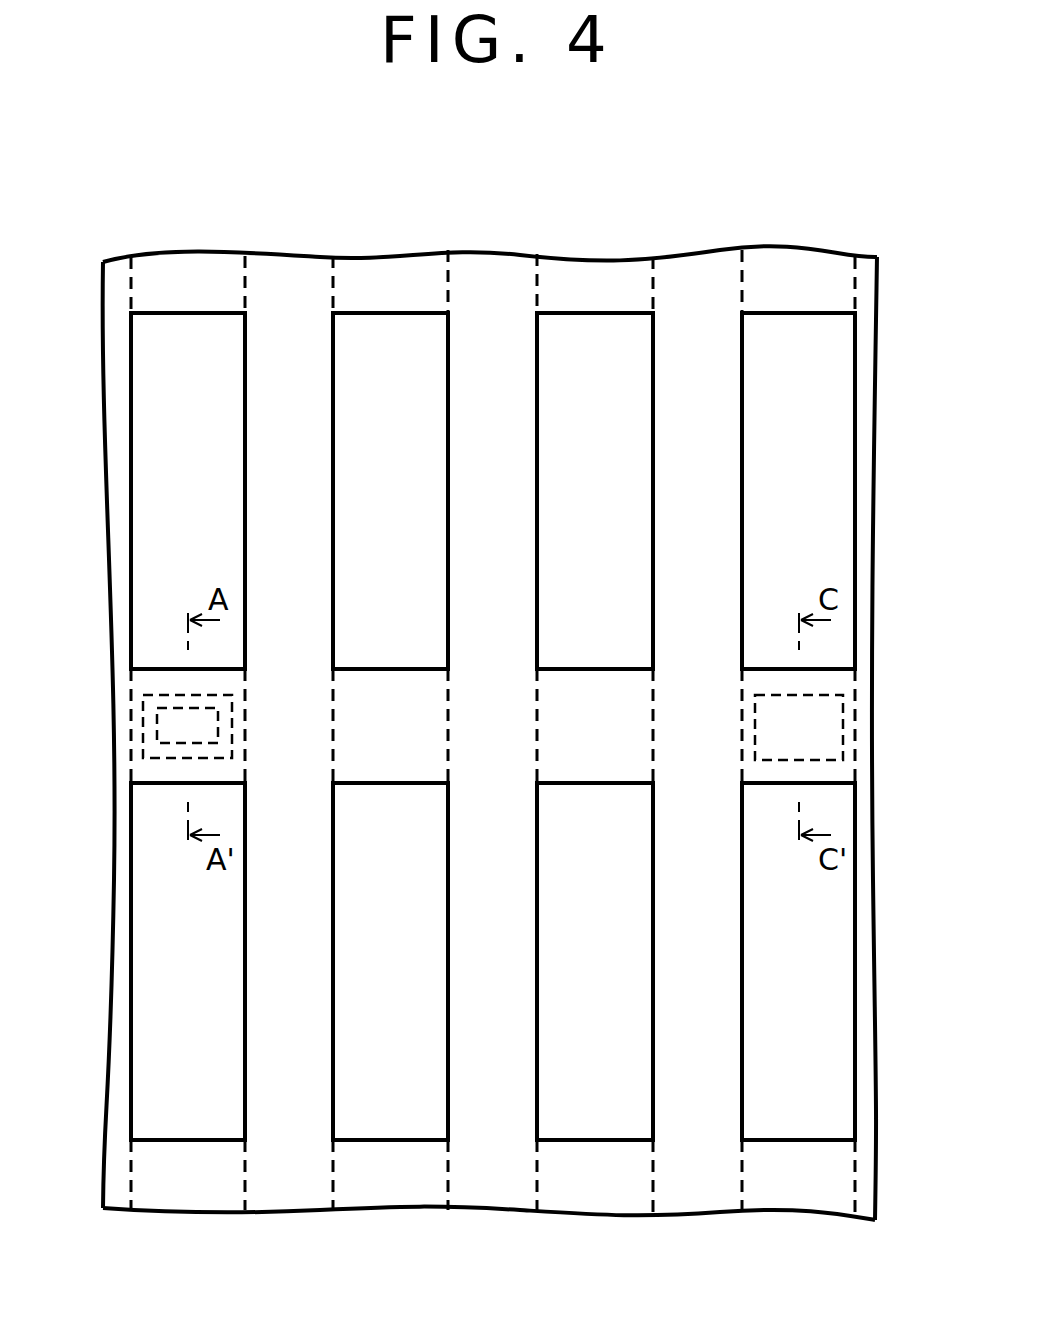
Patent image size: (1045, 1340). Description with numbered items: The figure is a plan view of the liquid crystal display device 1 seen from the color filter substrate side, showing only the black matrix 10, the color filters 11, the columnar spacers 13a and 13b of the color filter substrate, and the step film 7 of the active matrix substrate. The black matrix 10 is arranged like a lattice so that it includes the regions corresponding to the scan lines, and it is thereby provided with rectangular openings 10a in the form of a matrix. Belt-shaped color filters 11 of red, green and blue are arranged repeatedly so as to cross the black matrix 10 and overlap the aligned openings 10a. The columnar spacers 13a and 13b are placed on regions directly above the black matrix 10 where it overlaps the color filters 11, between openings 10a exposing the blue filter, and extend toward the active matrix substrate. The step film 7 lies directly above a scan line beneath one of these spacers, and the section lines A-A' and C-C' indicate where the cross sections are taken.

The liquid crystal display device 1 is at (874, 228).
The openings 10a is at (131, 352).
The color filters 11 is at (216, 336).
The black matrix 10 is at (280, 284).
The columnar spacer 13a is at (130, 715).
The columnar spacer 13b is at (817, 741).
The step film 7 is at (170, 728).